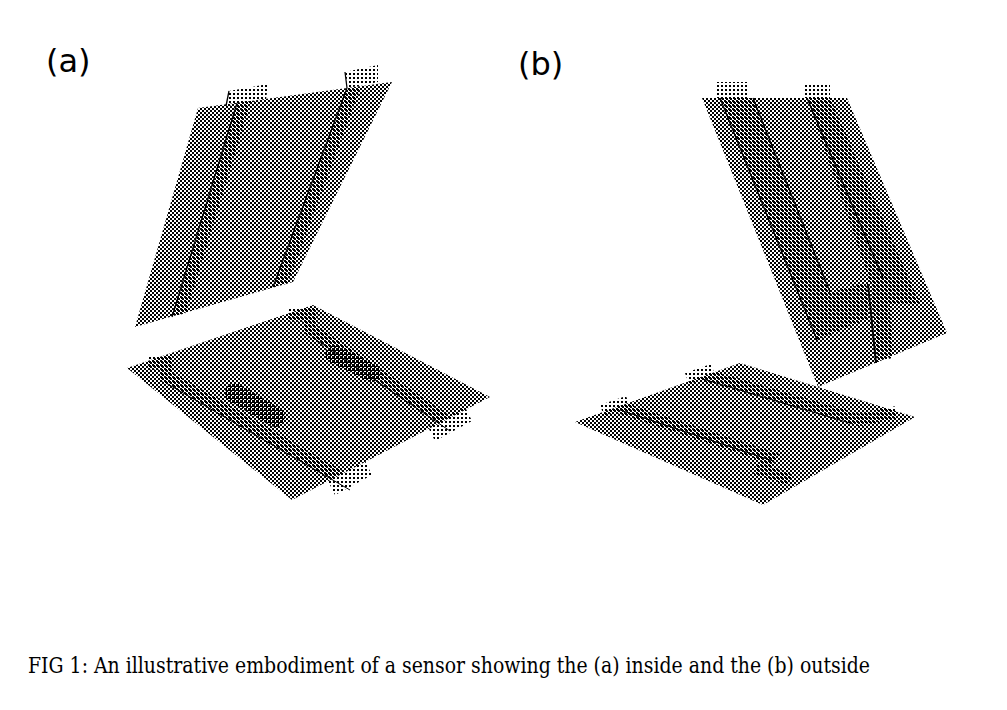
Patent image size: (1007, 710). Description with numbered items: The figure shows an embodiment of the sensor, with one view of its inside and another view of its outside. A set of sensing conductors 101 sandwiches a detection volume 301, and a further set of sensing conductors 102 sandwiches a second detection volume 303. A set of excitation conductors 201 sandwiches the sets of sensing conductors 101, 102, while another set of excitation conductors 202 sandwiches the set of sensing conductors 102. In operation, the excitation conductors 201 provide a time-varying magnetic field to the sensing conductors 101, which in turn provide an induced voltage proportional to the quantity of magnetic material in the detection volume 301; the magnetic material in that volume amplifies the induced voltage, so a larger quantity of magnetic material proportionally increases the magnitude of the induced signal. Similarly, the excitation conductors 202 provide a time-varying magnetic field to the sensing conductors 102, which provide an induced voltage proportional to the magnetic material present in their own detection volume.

In FIG. 1A, the set of sensing conductors 101 is at (238, 130).
In FIG. 1B, the set of sensing conductors 101 is at (865, 417).
In FIG. 1A, the set of sensing conductors 102 is at (352, 108).
In FIG. 1B, the set of sensing conductors 102 is at (665, 418).
In FIG. 1A, the set of excitation conductors 201 is at (238, 96).
In FIG. 1B, the set of excitation conductors 201 is at (742, 98).
In FIG. 1A, the set of excitation conductors 202 is at (360, 80).
In FIG. 1B, the set of excitation conductors 202 is at (817, 92).
In FIG. 1A, the detection volume 301 is at (265, 408).
In FIG. 1A, the second detection volume 303 is at (352, 367).